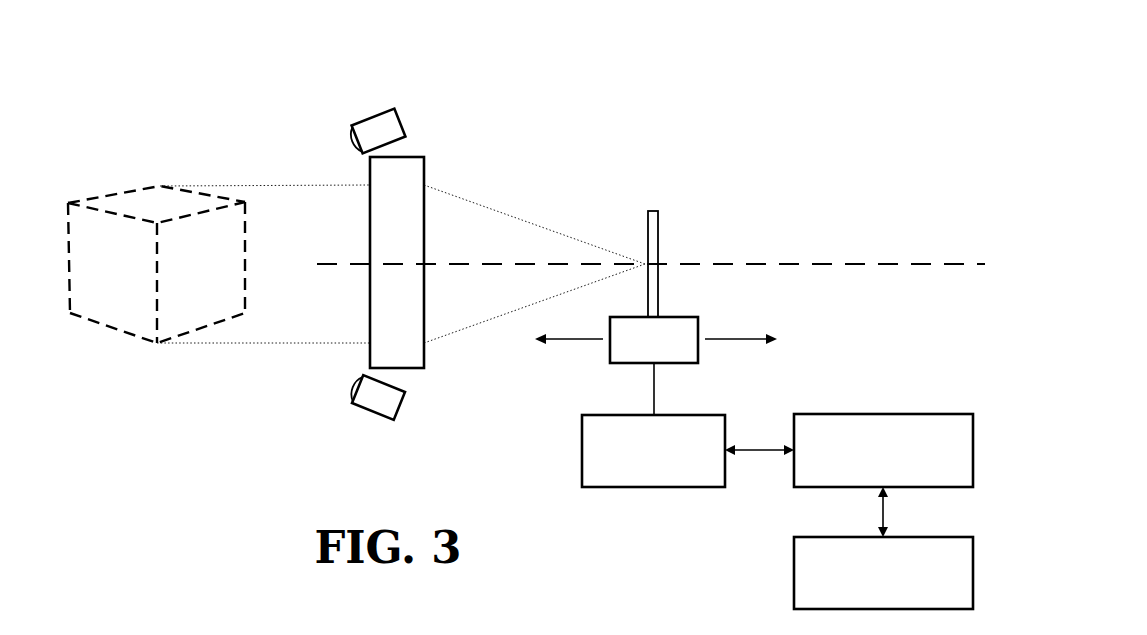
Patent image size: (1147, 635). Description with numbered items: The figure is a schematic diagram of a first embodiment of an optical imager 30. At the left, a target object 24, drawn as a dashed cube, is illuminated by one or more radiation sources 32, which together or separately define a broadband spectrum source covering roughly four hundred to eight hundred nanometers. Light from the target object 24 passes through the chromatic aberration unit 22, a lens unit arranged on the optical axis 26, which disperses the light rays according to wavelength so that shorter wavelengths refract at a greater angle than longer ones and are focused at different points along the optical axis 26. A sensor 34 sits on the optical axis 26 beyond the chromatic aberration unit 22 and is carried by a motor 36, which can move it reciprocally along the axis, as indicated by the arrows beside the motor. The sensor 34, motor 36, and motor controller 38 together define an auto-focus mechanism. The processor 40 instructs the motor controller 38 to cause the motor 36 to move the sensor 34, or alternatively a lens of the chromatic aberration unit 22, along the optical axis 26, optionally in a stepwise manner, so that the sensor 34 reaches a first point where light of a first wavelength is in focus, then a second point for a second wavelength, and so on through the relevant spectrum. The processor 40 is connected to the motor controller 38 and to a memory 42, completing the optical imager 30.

The chromatic aberration unit 22 is at (417, 155).
The target object 24 is at (112, 205).
The optical axis 26 is at (362, 267).
The optical imager 30 is at (850, 162).
The radiation sources 32 is at (375, 112).
The sensor 34 is at (653, 210).
The motor 36 is at (637, 363).
The motor controller 38 is at (582, 450).
The processor 40 is at (873, 413).
The memory 42 is at (794, 582).